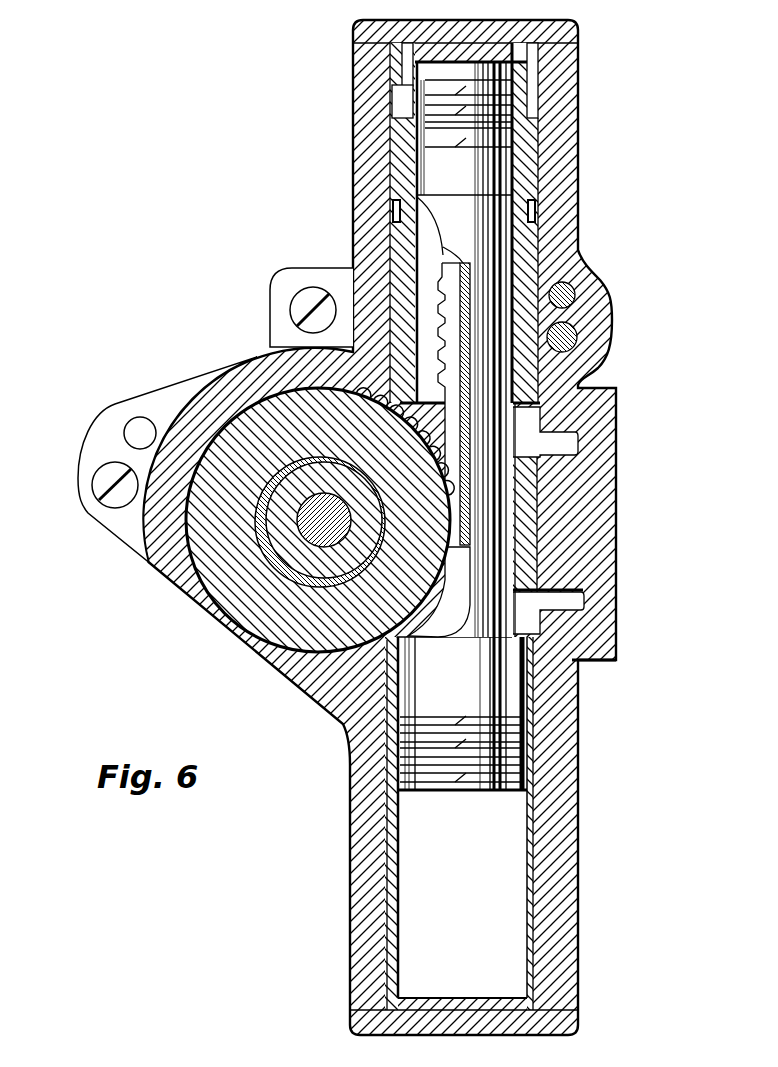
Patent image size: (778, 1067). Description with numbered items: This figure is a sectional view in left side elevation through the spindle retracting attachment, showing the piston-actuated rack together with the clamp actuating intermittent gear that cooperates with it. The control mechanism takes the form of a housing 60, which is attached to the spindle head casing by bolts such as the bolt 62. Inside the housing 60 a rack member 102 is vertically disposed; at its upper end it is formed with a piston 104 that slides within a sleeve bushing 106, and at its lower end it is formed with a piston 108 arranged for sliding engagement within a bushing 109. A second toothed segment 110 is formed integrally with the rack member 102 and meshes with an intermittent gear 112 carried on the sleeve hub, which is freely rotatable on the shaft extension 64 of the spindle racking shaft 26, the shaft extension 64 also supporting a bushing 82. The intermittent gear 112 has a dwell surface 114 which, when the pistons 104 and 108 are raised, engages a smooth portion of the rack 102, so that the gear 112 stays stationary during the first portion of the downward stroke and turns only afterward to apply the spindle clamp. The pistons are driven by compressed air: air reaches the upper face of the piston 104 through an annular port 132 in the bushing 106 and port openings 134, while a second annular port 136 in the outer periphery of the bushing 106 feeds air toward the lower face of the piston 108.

The spindle racking shaft 26 is at (300, 532).
The housing 60 is at (258, 358).
The bolt 62 is at (100, 486).
The shaft extension 64 is at (288, 557).
The bushing 82 is at (292, 575).
The rack member 102 is at (500, 244).
The piston 104 is at (422, 160).
The sleeve bushing 106 is at (397, 178).
The piston 108 is at (468, 780).
The bushing 109 is at (527, 895).
The second toothed segment 110 is at (443, 290).
The intermittent gear 112 is at (445, 480).
The dwell surface 114 is at (513, 560).
The annular port 132 is at (392, 105).
The port openings 134 is at (408, 78).
The annular port 136 is at (393, 209).